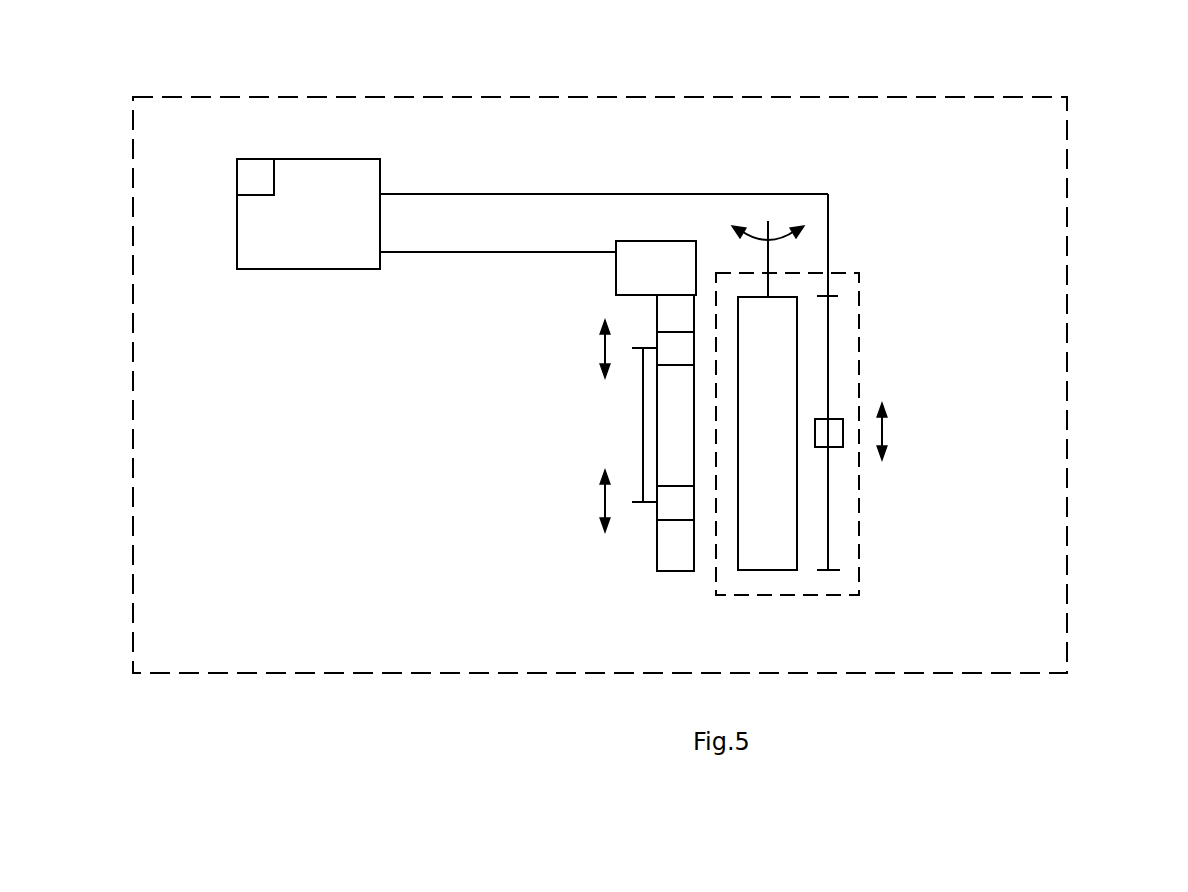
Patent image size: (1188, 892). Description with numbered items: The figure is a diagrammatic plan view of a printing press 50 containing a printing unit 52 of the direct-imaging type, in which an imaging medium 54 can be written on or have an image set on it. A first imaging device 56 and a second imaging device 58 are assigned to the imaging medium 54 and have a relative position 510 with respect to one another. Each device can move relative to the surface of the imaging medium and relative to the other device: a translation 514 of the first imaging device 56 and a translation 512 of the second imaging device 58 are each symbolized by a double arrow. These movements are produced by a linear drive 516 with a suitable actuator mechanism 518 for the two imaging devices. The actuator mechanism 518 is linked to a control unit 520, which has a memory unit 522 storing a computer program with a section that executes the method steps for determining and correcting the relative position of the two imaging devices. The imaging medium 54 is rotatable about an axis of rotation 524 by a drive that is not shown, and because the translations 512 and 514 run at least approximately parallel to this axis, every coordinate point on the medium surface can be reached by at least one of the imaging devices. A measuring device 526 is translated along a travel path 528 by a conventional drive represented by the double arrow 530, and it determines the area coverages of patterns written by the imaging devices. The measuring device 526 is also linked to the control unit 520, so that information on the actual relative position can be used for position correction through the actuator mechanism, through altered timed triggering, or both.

The printing press 50 is at (1068, 162).
The printing unit 52 is at (847, 270).
The imaging medium 54 is at (788, 335).
The first imaging device 56 is at (668, 513).
The second imaging device 58 is at (672, 358).
The relative position 510 is at (640, 438).
The translation of the second imaging device 512 is at (600, 505).
The translation of the first imaging device 514 is at (600, 347).
The linear drive 516 is at (672, 573).
The actuator mechanism 518 is at (657, 250).
The control unit 520 is at (332, 175).
The memory unit 522 is at (255, 167).
The axis of rotation 524 is at (775, 228).
The measuring device 526 is at (835, 440).
The travel path 528 is at (828, 545).
The double arrow 530 is at (887, 431).